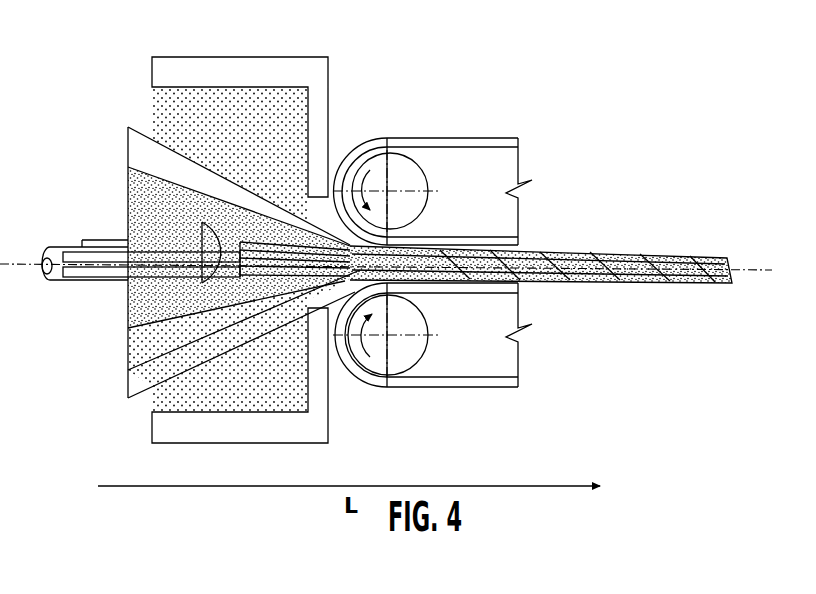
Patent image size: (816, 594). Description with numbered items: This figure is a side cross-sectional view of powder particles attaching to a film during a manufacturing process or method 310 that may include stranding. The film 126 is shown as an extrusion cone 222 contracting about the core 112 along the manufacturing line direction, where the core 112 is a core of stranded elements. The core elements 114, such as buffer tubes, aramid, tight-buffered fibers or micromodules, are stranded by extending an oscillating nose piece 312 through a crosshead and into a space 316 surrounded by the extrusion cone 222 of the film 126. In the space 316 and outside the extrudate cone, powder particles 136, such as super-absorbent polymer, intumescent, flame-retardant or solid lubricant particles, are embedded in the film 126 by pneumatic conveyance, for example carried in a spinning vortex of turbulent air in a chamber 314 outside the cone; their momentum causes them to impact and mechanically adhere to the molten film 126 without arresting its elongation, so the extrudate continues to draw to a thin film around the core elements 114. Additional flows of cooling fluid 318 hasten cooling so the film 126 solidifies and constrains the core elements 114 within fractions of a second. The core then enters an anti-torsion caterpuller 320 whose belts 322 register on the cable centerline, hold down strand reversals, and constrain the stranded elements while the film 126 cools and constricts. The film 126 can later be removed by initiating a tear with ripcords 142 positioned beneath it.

The manufacturing process or method 310 is at (664, 126).
The oscillating nose piece 312 is at (70, 237).
The chamber 314 is at (212, 80).
The space 316 is at (136, 192).
The cooling fluid 318 is at (378, 117).
The anti-torsion caterpuller 320 is at (447, 157).
The belts 322 is at (503, 145).
The core 112 is at (608, 283).
The core elements 114 is at (63, 284).
The film 126 is at (157, 130).
The powder particles 136 is at (276, 116).
The ripcords 142 is at (120, 326).
The extrusion cone 222 is at (195, 209).